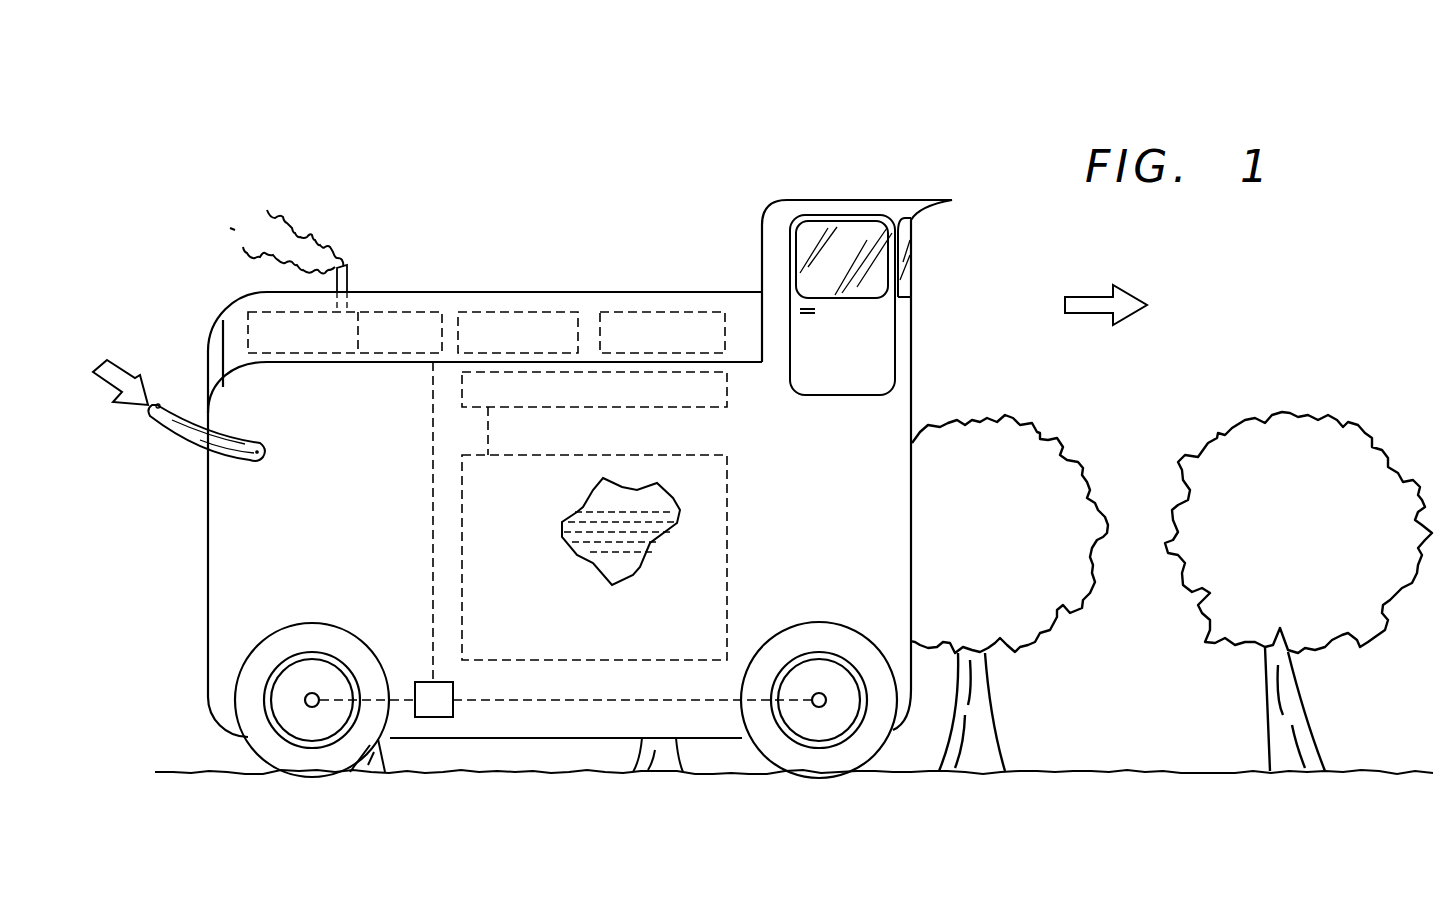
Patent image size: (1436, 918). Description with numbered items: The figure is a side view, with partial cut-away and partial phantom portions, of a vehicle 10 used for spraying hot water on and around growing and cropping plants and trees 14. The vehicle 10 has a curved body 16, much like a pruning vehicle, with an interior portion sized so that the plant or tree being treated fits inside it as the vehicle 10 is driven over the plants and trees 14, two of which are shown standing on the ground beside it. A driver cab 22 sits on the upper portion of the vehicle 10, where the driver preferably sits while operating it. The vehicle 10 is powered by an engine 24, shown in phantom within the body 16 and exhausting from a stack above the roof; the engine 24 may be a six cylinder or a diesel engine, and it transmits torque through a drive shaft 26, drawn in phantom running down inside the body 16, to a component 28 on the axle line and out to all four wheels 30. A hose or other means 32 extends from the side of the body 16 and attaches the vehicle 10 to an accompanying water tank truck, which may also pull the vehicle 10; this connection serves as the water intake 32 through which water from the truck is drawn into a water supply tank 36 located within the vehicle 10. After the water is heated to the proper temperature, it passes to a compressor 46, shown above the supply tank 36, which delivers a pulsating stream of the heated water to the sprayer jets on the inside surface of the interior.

The vehicle 10 is at (565, 292).
The growing and cropping plants and trees 14 is at (1003, 415).
The curved body 16 is at (467, 302).
The driver cab 22 is at (802, 200).
The engine 24 is at (380, 333).
The drive shaft 26 is at (433, 502).
The pump 28 is at (440, 700).
The wheels 30 is at (312, 718).
The hose / water intake 32 is at (185, 442).
The water supply tank 36 is at (687, 555).
The compressor 46 is at (633, 388).